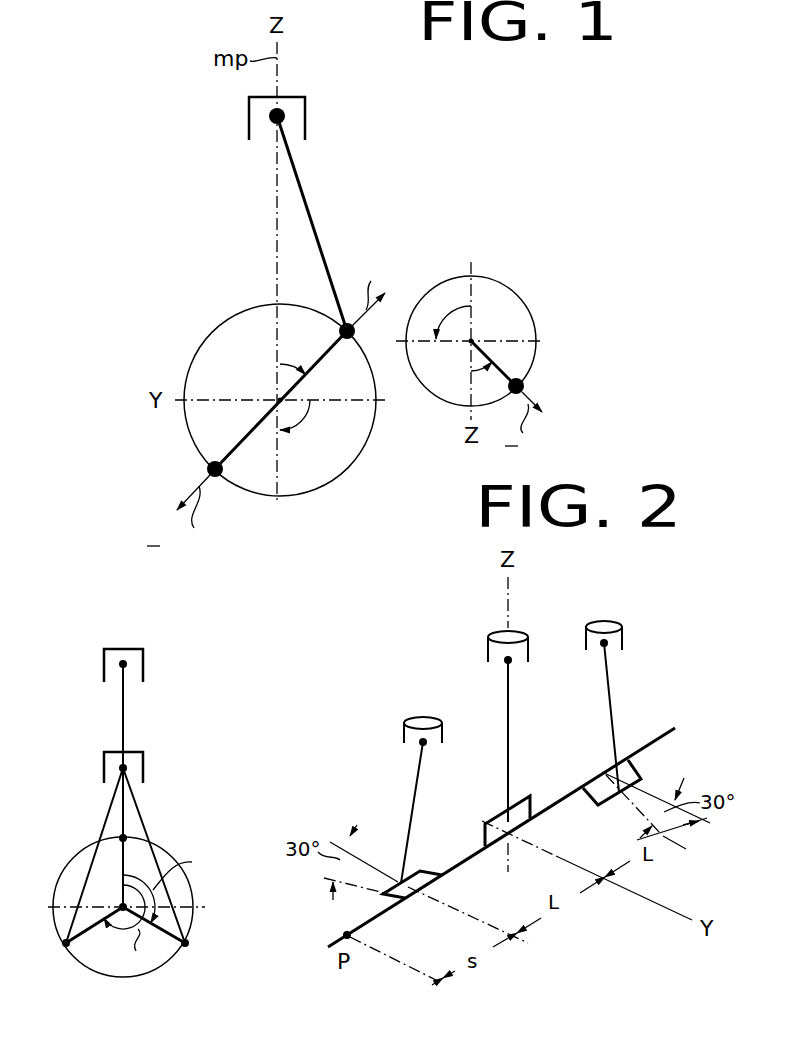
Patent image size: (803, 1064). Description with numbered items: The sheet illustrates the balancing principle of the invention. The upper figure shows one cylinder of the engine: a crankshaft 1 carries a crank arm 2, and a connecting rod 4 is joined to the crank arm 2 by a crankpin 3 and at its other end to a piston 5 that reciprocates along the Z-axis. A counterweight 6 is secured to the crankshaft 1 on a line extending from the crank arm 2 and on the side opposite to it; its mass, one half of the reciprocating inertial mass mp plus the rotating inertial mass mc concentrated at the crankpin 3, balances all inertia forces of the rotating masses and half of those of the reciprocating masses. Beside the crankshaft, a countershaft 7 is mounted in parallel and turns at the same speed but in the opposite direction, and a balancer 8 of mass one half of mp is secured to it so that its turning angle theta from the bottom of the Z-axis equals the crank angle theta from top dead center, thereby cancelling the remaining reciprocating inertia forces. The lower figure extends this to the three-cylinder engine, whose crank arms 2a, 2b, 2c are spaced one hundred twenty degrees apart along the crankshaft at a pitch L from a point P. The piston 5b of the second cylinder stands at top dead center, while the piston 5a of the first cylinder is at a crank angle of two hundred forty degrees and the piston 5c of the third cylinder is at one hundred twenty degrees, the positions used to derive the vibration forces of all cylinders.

In FIG. 1, the crankshaft 1 is at (279, 398).
In FIG. 2, the crankshaft 1 is at (112, 900).
In FIG. 1, the crank arm 2 is at (326, 358).
In FIG. 1, the crankpin 3 is at (353, 338).
In FIG. 1, the connecting rod 4 is at (318, 236).
In FIG. 1, the piston 5 is at (305, 130).
In FIG. 1, the counterweight 6 is at (209, 467).
In FIG. 1, the countershaft 7 is at (473, 339).
In FIG. 1, the balancer 8 is at (524, 387).
In FIG. 2, the crank arm of the first cylinder 2a is at (68, 946).
In FIG. 2, the crank arm of the second cylinder 2b is at (125, 858).
In FIG. 2, the crank arm of the third cylinder 2c is at (184, 947).
In FIG. 2, the piston of the first cylinder 5a is at (145, 777).
In FIG. 2, the piston of the second cylinder 5b is at (145, 678).
In FIG. 2, the piston of the third cylinder 5c is at (623, 648).